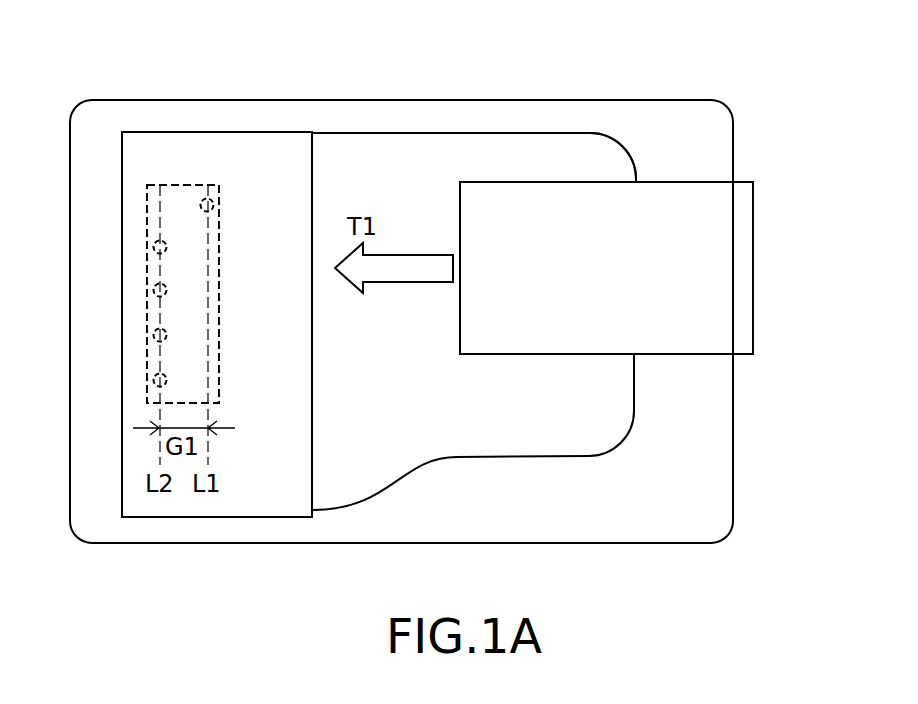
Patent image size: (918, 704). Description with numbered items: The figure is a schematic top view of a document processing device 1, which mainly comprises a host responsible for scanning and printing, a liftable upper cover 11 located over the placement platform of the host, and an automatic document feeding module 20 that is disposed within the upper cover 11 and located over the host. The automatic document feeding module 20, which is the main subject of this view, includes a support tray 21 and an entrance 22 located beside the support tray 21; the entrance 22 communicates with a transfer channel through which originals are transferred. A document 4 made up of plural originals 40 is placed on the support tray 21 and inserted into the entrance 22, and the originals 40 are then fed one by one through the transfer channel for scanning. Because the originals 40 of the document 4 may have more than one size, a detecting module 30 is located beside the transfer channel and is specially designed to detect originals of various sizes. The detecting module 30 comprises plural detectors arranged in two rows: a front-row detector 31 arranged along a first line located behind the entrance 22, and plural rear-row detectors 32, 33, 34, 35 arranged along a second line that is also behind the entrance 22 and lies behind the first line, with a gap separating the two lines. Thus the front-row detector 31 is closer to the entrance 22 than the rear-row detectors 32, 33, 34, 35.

The document processing device 1 is at (401, 276).
The upper cover 11 is at (523, 113).
The automatic document feeding module 20 is at (193, 141).
The support tray 21 is at (605, 165).
The entrance 22 is at (313, 192).
The document 4 is at (738, 258).
The originals 40 is at (606, 268).
The detecting module 30 is at (219, 310).
The front-row detector 31 is at (212, 200).
The rear-row detector 32 is at (156, 243).
The rear-row detector 33 is at (156, 286).
The rear-row detector 34 is at (156, 331).
The rear-row detector 35 is at (156, 376).